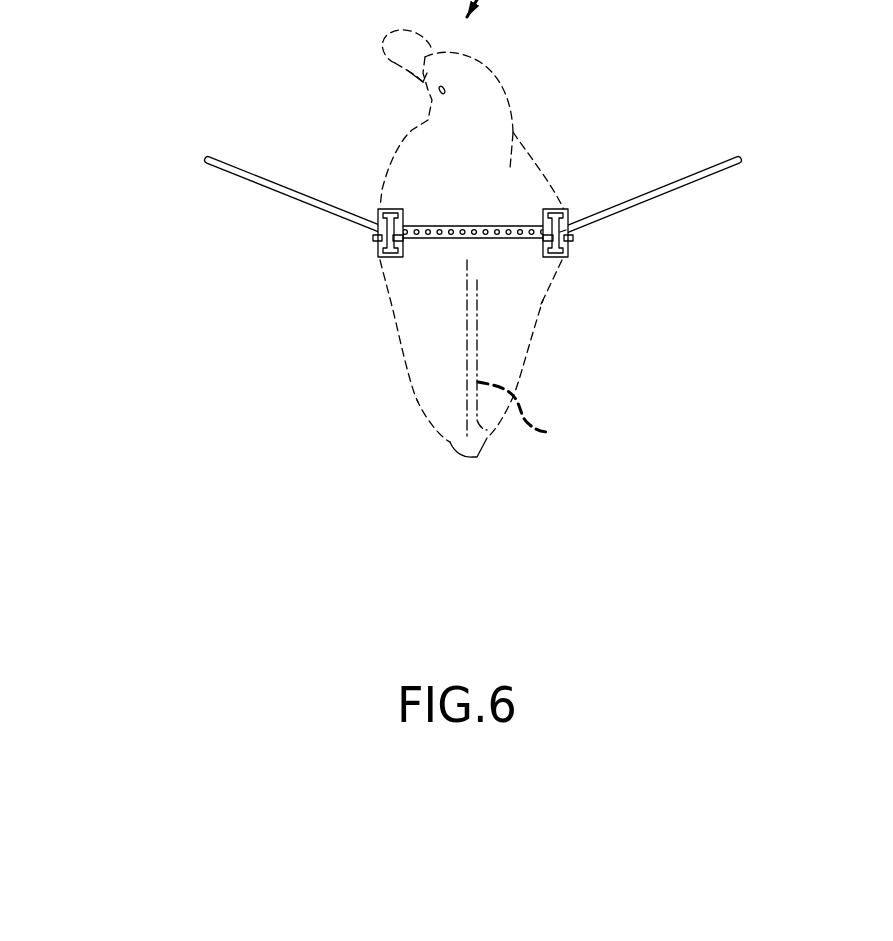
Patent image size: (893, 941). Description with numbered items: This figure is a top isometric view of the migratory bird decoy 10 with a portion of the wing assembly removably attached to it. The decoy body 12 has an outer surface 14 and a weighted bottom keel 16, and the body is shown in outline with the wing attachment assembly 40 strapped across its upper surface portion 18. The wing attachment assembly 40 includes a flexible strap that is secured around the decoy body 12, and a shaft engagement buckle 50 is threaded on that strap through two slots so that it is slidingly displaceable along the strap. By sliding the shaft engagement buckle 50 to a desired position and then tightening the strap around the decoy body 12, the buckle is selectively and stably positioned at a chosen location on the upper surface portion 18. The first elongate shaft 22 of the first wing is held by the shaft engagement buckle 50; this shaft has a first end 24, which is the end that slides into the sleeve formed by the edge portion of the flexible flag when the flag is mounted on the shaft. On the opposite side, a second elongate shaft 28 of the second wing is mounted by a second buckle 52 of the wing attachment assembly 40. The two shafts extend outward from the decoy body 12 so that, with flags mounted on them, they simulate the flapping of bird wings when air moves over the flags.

The migratory bird decoy 10 is at (182, 223).
The decoy body 12 is at (403, 409).
The outer surface 14 is at (542, 282).
The weighted bottom keel 16 is at (527, 416).
The upper surface portion 18 is at (513, 318).
The first elongate shaft 22 is at (641, 176).
The first end 24 is at (566, 230).
The second elongate shaft 28 is at (265, 160).
The wing attachment assembly 40 is at (428, 252).
The shaft engagement buckle 50 is at (584, 260).
The second buckle 52 is at (368, 266).